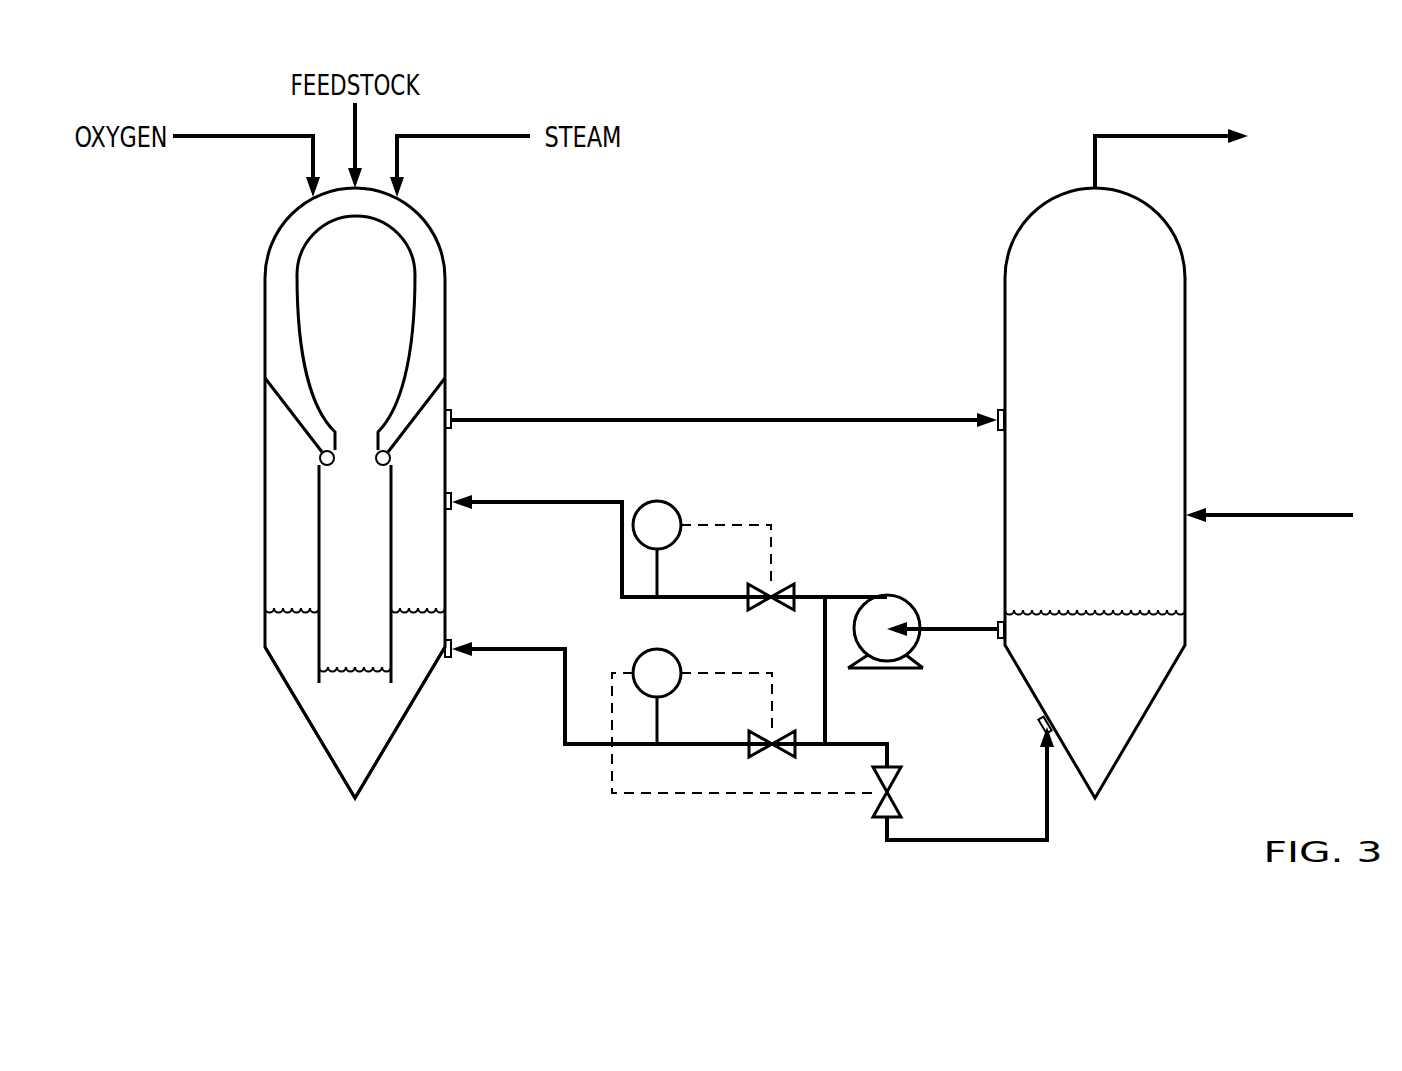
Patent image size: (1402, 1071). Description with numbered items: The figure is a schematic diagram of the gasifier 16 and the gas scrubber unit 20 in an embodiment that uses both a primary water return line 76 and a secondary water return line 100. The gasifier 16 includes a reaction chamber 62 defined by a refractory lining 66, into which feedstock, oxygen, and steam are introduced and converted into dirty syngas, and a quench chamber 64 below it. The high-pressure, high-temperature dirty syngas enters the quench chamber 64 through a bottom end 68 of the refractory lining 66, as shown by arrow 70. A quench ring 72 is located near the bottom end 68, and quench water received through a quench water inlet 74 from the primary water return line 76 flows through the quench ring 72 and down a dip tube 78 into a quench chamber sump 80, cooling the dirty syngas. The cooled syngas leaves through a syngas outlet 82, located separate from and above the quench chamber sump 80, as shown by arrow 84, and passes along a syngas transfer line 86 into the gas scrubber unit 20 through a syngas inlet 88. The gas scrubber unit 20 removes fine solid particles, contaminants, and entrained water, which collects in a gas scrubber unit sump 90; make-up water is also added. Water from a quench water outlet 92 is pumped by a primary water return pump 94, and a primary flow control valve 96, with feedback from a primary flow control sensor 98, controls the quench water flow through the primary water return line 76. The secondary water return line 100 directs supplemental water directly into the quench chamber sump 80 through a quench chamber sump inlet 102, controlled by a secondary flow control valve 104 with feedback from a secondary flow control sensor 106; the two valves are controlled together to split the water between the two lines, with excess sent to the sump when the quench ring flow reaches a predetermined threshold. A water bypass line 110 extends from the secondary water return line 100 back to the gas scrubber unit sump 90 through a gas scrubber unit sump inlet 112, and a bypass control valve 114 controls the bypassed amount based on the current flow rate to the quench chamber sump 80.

The gasifier 16 is at (255, 748).
The gas scrubber unit 20 is at (1218, 728).
The reaction chamber 62 is at (240, 270).
The quench chamber 64 is at (243, 600).
The refractory lining 66 is at (436, 262).
The bottom end 68 is at (310, 420).
The arrow 70 is at (355, 428).
The quench ring 72 is at (321, 457).
The quench water inlet 74 is at (452, 508).
The primary water return line 76 is at (675, 600).
The dip tube 78 is at (393, 527).
The quench chamber sump 80 is at (373, 717).
The syngas outlet 82 is at (452, 411).
The arrow 84 is at (437, 430).
The syngas transfer line 86 is at (720, 421).
The syngas inlet 88 is at (1000, 412).
The gas scrubber unit sump 90 is at (1175, 633).
The quench water outlet 92 is at (1000, 640).
The primary water return pump 94 is at (888, 670).
The primary flow control valve 96 is at (780, 585).
The primary flow control sensor 98 is at (640, 506).
The secondary water return line 100 is at (565, 697).
The quench chamber sump inlet 102 is at (448, 660).
The secondary flow control valve 104 is at (760, 752).
The secondary flow control sensor 106 is at (640, 657).
The water bypass line 110 is at (935, 842).
The gas scrubber unit sump inlet 112 is at (1040, 726).
The bypass control valve 114 is at (895, 790).